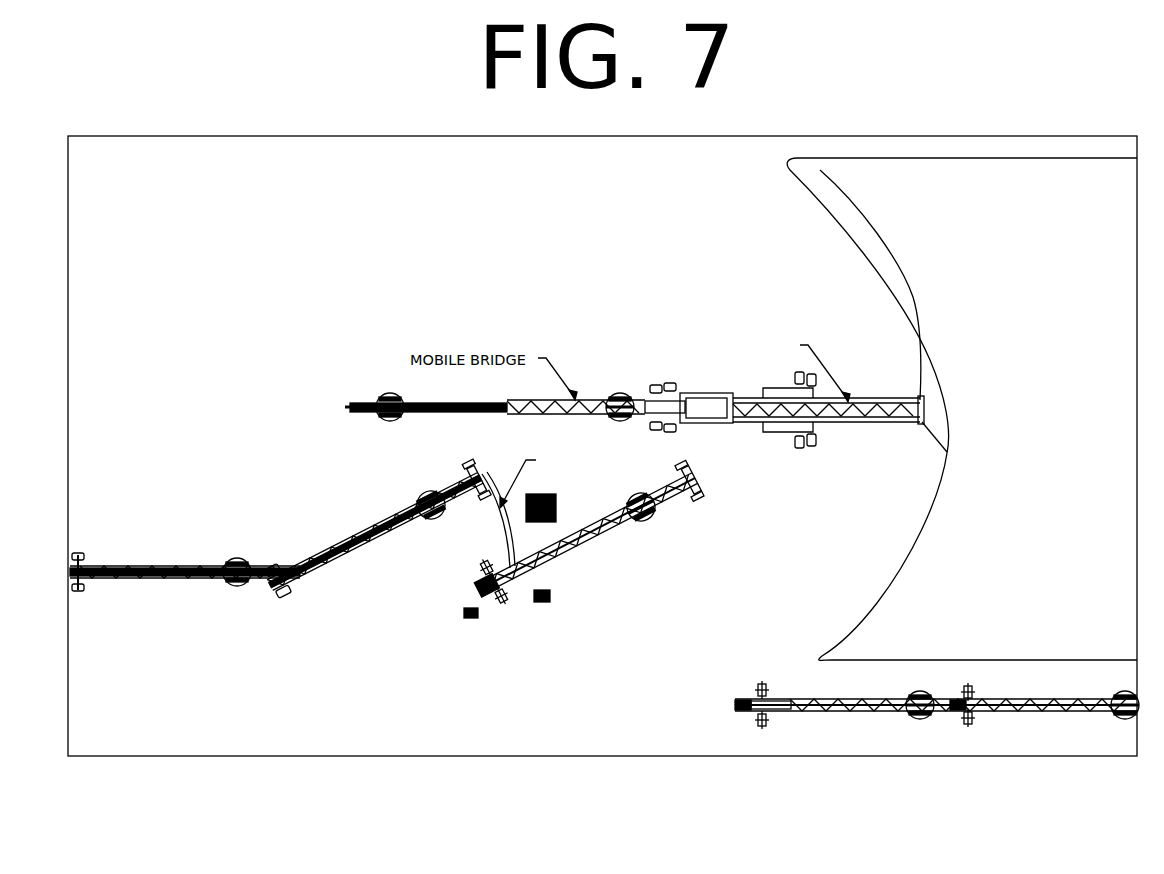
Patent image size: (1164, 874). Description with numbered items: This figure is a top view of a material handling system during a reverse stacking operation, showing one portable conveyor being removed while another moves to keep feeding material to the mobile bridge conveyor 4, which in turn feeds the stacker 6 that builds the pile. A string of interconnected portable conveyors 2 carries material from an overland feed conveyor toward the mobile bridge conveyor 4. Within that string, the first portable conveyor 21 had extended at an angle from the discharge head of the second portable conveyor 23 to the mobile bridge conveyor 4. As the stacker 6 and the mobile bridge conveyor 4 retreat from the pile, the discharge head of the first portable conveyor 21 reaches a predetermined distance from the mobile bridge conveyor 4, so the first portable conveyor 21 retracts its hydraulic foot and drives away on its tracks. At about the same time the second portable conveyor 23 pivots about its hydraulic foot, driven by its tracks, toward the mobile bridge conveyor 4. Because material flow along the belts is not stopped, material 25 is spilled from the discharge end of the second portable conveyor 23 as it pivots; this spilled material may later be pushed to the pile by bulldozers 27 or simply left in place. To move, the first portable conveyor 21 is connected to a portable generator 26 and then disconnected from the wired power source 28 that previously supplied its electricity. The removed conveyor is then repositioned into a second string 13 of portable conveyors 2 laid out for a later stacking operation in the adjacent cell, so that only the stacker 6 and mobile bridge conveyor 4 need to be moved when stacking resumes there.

The portable conveyors 2 is at (162, 580).
The mobile bridge conveyor 4 is at (390, 393).
The stacker 6 is at (880, 395).
The second string of portable conveyors 13 is at (818, 692).
The first portable conveyor 21 is at (571, 551).
The second portable conveyor 23 is at (360, 535).
The material 25 is at (495, 525).
The portable generator 26 is at (559, 606).
The bulldozers 27 is at (557, 509).
The wired power source 28 is at (462, 625).